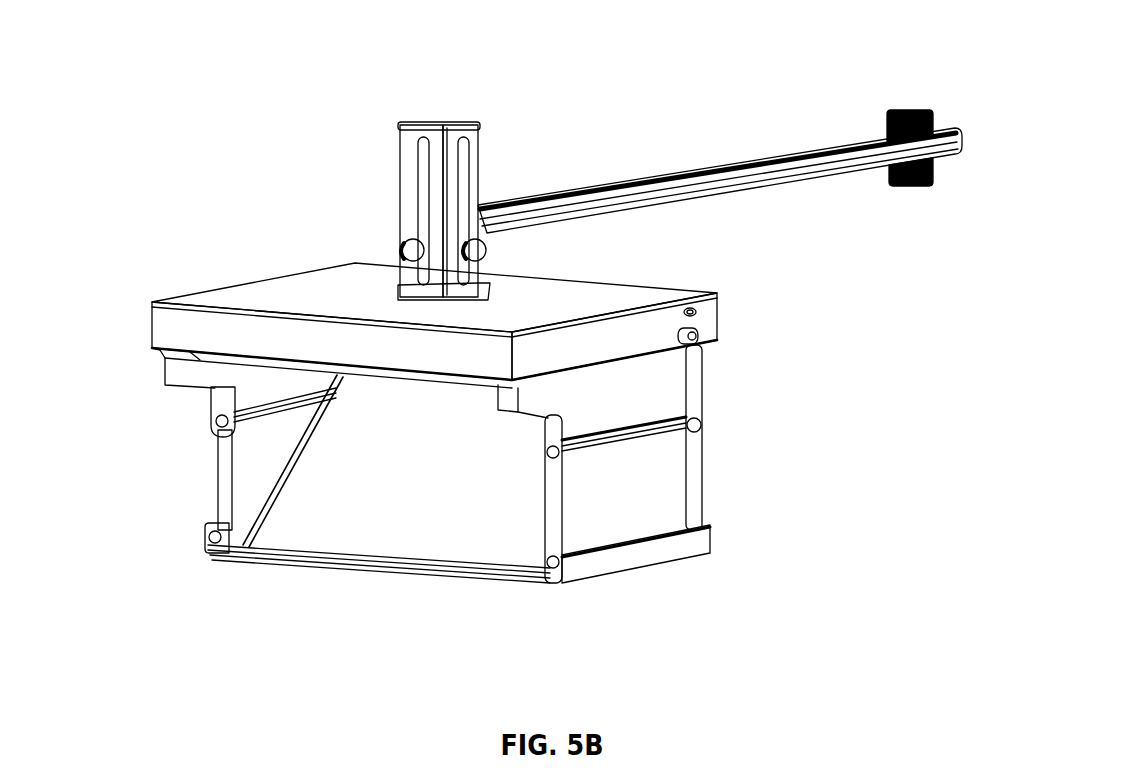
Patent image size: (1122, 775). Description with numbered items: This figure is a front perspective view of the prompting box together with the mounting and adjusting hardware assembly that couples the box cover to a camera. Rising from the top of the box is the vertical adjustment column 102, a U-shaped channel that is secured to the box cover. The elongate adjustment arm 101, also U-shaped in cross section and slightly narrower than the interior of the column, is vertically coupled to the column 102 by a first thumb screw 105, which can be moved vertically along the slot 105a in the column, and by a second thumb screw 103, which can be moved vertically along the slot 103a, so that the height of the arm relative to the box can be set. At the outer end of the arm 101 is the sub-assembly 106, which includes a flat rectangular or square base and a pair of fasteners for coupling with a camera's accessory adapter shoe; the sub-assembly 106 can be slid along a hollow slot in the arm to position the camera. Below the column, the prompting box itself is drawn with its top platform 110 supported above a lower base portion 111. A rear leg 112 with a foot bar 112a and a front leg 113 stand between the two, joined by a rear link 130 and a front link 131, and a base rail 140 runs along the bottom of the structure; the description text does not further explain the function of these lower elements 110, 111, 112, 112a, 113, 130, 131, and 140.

The elongate adjustment arm 101 is at (713, 165).
The vertical adjustment column 102 is at (462, 155).
The second thumb screw 103 is at (488, 250).
The slot 103a is at (470, 162).
The first thumb screw 105 is at (402, 250).
The slot 105a is at (412, 160).
The sub-assembly 106 is at (932, 118).
The table top platform 110 is at (165, 325).
The lower base frame 111 is at (377, 513).
The rear leg 112 is at (690, 470).
The rear foot bar 112a is at (672, 537).
The front leg 113 is at (219, 470).
The rear link 130 is at (665, 413).
The front link bracket 131 is at (228, 433).
The base rail 140 is at (290, 560).